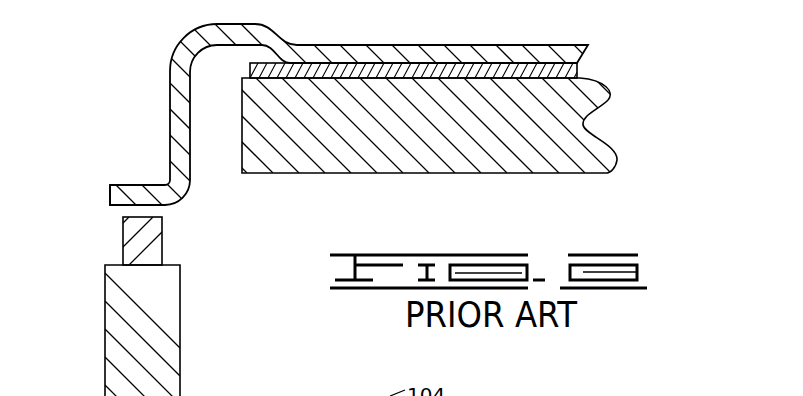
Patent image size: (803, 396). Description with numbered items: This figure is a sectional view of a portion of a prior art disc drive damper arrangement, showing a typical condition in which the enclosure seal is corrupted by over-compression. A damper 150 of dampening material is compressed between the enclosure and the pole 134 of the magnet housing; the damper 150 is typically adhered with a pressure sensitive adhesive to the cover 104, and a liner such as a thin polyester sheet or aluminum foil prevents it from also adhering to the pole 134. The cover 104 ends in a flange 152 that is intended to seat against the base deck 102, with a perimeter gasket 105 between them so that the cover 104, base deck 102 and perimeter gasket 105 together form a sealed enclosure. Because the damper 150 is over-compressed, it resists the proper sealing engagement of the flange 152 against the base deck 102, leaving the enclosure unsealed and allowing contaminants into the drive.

The cover 104 is at (320, 45).
The damper 150 is at (580, 70).
The pole 134 is at (600, 135).
The flange 152 is at (117, 204).
The perimeter gasket 105 is at (160, 233).
The base deck 102 is at (180, 318).